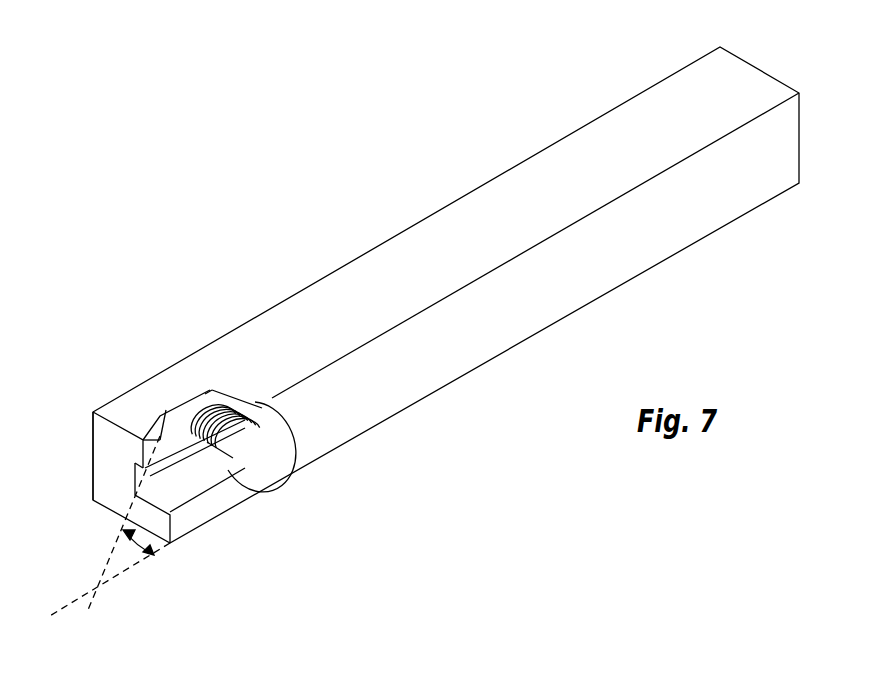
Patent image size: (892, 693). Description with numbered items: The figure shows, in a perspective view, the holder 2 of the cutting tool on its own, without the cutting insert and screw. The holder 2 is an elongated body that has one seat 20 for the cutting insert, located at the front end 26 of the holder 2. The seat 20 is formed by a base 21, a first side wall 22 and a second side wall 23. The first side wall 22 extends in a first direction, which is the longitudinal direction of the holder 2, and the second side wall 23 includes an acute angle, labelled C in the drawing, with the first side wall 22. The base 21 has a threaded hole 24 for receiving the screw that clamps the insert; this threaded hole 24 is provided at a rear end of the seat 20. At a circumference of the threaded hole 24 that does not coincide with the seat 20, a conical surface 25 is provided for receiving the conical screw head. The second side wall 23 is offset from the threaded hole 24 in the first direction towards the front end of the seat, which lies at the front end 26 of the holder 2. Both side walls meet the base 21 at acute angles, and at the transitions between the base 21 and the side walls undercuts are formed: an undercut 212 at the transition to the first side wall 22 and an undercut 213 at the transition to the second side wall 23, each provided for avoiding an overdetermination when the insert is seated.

The holder 2 is at (190, 180).
The seat 20 is at (265, 522).
The base 21 is at (205, 413).
The first side wall 22 is at (188, 487).
The second side wall 23 is at (158, 447).
The threaded hole 24 is at (263, 463).
The conical surface 25 is at (280, 438).
The front end 26 is at (104, 445).
The undercut 212 is at (172, 490).
The undercut 213 is at (158, 405).